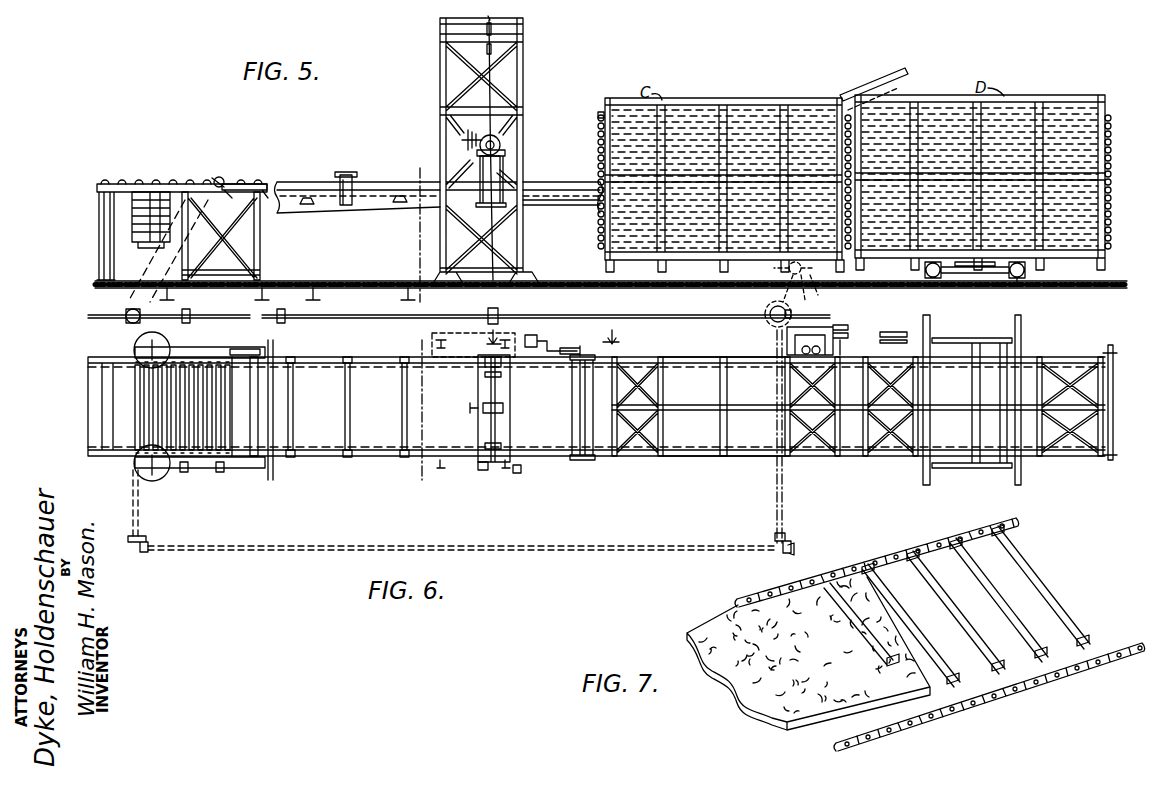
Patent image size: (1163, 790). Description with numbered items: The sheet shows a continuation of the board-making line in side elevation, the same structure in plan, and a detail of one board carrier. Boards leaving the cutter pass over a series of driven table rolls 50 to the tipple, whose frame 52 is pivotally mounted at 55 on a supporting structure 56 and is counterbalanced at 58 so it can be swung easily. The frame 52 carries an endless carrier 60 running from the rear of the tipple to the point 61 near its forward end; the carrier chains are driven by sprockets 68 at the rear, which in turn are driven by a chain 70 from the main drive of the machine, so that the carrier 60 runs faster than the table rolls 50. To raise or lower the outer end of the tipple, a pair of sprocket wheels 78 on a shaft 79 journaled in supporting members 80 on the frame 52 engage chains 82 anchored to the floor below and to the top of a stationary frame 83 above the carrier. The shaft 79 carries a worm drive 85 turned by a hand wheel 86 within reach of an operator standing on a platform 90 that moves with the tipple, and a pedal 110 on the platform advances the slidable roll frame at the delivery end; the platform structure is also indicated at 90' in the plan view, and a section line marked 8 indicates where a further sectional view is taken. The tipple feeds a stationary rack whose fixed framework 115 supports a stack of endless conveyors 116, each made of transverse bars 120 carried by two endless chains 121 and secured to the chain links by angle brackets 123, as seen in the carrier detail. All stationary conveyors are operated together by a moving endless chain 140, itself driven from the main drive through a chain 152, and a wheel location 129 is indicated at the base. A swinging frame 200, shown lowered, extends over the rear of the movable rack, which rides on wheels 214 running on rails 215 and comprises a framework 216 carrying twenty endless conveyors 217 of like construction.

In FIG. 5, the driven table rolls 50 is at (149, 184).
In FIG. 5, the tipple frame 52 is at (566, 202).
In FIG. 5, the pivot 55 is at (222, 184).
In FIG. 5, the supporting structure 56 is at (259, 250).
In FIG. 5, the counterbalance 58 is at (142, 242).
In FIG. 6, the counterbalance 58 is at (166, 333).
In FIG. 5, the endless carrier 60 is at (385, 210).
In FIG. 5, the forward end point of carrier 61 is at (586, 182).
In FIG. 5, the sprockets 68 is at (217, 182).
In FIG. 5, the drive chain 70 is at (160, 264).
In FIG. 5, the sprocket wheels 78 is at (516, 146).
In FIG. 6, the sprocket wheels 78 is at (505, 440).
In FIG. 6, the shaft 79 is at (507, 375).
In FIG. 5, the supporting members 80 is at (504, 169).
In FIG. 5, the chain 82 is at (494, 71).
In FIG. 5, the stationary frame 83 is at (521, 93).
In FIG. 6, the worm drive 85 is at (505, 406).
In FIG. 6, the hand wheel 86 is at (470, 413).
In FIG. 6, the platform 90 is at (473, 393).
In FIG. 6, the guide frame 90' is at (492, 470).
In FIG. 6, the pedal 110 is at (531, 335).
In FIG. 6, the section line 8 is at (556, 331).
In FIG. 5, the fixed framework 115 is at (724, 177).
In FIG. 6, the fixed framework 115 is at (716, 464).
In FIG. 5, the endless conveyors 116 is at (624, 118).
In FIG. 6, the endless conveyors 116 is at (680, 462).
In FIG. 7, the transverse supporting bars 120 is at (1044, 579).
In FIG. 7, the endless chains 121 is at (998, 702).
In FIG. 7, the angle brackets 123 is at (1011, 547).
In FIG. 5, the car wheel 129 is at (780, 272).
In FIG. 5, the endless chain 140 is at (819, 289).
In FIG. 6, the chain 152 is at (788, 310).
In FIG. 5, the swinging frame 200 is at (896, 68).
In FIG. 5, the wheels 214 is at (1027, 269).
In FIG. 5, the rails 215 is at (1023, 282).
In FIG. 5, the framework 216 is at (1092, 98).
In FIG. 5, the endless conveyors 217 is at (1113, 177).